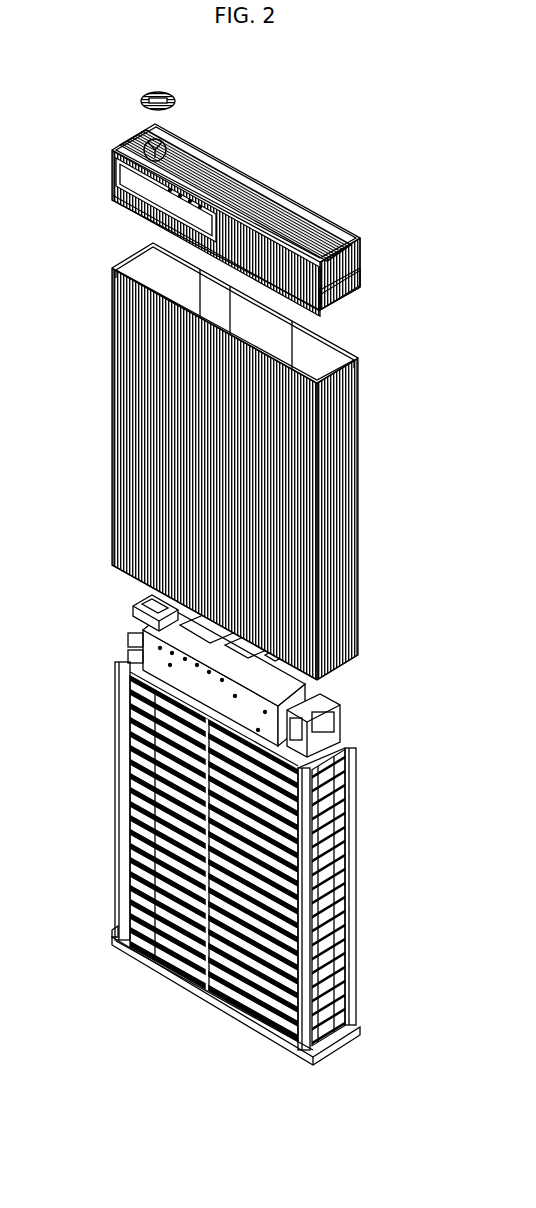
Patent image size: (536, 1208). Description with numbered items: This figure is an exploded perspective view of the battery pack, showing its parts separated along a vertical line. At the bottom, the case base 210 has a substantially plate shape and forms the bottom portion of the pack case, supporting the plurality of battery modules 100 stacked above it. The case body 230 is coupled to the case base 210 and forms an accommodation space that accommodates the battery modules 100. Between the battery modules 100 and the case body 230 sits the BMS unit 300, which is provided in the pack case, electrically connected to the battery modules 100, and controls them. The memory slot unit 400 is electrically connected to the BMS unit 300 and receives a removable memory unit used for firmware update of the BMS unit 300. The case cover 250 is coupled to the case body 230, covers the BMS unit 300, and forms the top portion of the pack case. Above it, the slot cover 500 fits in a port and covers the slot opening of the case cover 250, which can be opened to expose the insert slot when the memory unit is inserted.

The battery module 100 is at (128, 852).
The case base 210 is at (373, 1021).
The case body 230 is at (375, 381).
The case cover 250 is at (374, 230).
The BMS unit 300 is at (113, 636).
The memory slot unit 400 is at (123, 594).
The slot cover 500 is at (128, 90).